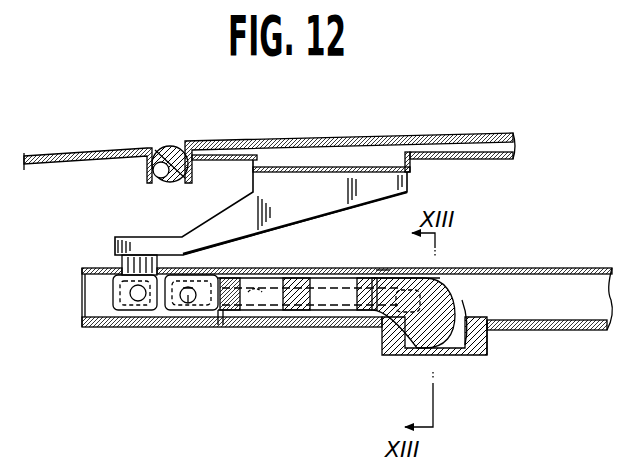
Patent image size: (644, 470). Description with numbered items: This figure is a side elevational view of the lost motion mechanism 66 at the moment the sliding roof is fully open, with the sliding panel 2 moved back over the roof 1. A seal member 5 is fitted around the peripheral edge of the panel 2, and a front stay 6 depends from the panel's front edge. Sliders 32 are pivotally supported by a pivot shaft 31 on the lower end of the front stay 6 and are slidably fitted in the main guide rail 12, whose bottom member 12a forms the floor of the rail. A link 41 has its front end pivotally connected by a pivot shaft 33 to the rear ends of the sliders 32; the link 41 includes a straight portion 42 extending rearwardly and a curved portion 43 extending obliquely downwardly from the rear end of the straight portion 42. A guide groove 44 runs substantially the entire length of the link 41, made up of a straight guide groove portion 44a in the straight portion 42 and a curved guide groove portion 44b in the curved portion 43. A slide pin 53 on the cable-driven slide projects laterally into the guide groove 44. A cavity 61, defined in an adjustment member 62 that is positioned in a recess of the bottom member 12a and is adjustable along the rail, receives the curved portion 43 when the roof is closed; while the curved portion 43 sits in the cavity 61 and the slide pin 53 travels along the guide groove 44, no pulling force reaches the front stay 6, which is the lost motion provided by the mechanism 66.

The roof 1 is at (88, 152).
The sliding panel 2 is at (474, 134).
The seal member 5 is at (173, 146).
The front stay 6 is at (268, 198).
The main guide rail 12 is at (361, 278).
The bottom member 12a is at (523, 323).
The pivot shaft 31 is at (133, 302).
The slider 32 is at (113, 298).
The pivot shaft 33 is at (188, 305).
The link 41 is at (222, 318).
The straight portion 42 is at (311, 287).
The curved portion 43 is at (405, 355).
The guide groove 44 is at (336, 297).
The straight guide groove portion 44a is at (256, 298).
The curved guide groove portion 44b is at (436, 318).
The slide pin 53 is at (376, 316).
The cavity 61 is at (467, 343).
The adjustment member 62 is at (488, 353).
The lost motion mechanism 66 is at (382, 262).